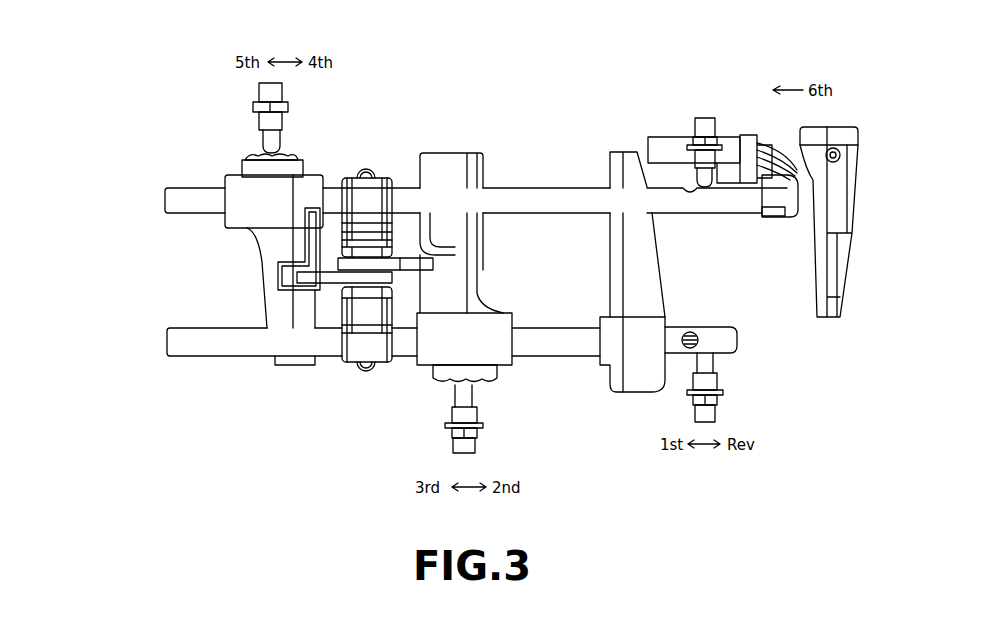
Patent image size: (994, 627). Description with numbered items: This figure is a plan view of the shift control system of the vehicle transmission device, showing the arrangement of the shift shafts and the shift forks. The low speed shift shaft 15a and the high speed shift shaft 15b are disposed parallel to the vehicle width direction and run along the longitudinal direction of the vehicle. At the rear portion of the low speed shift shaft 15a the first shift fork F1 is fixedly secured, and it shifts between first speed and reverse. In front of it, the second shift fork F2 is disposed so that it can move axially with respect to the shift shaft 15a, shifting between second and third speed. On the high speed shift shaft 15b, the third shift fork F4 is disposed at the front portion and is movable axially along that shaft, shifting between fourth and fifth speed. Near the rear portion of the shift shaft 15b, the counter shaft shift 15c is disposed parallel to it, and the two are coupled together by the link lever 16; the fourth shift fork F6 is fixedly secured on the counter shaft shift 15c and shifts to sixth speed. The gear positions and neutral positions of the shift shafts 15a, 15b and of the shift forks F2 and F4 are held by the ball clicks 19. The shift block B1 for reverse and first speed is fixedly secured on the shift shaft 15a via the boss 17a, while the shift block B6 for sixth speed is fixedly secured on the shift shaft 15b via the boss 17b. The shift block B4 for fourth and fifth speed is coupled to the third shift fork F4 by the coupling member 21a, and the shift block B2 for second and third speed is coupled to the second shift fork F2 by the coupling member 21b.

The low speed shift shaft 15a is at (178, 357).
The high speed shift shaft 15b is at (180, 192).
The counter shaft shift 15c is at (663, 137).
The link lever 16 is at (780, 186).
The boss 17a is at (357, 360).
The boss 17b is at (358, 175).
The ball click 19 is at (258, 122).
The coupling member 21a is at (280, 288).
The coupling member 21b is at (418, 263).
The shift block of the reverse-1st speed B1 is at (373, 292).
The shift block of the 2nd speed-3rd speed B2 is at (370, 265).
The shift block of the 4th speed-5th speed B4 is at (363, 282).
The shift block of the 6th speed B6 is at (362, 248).
The first shift fork F1 is at (625, 152).
The second shift fork F2 is at (455, 152).
The third shift fork F4 is at (288, 365).
The fourth shift fork F6 is at (830, 319).